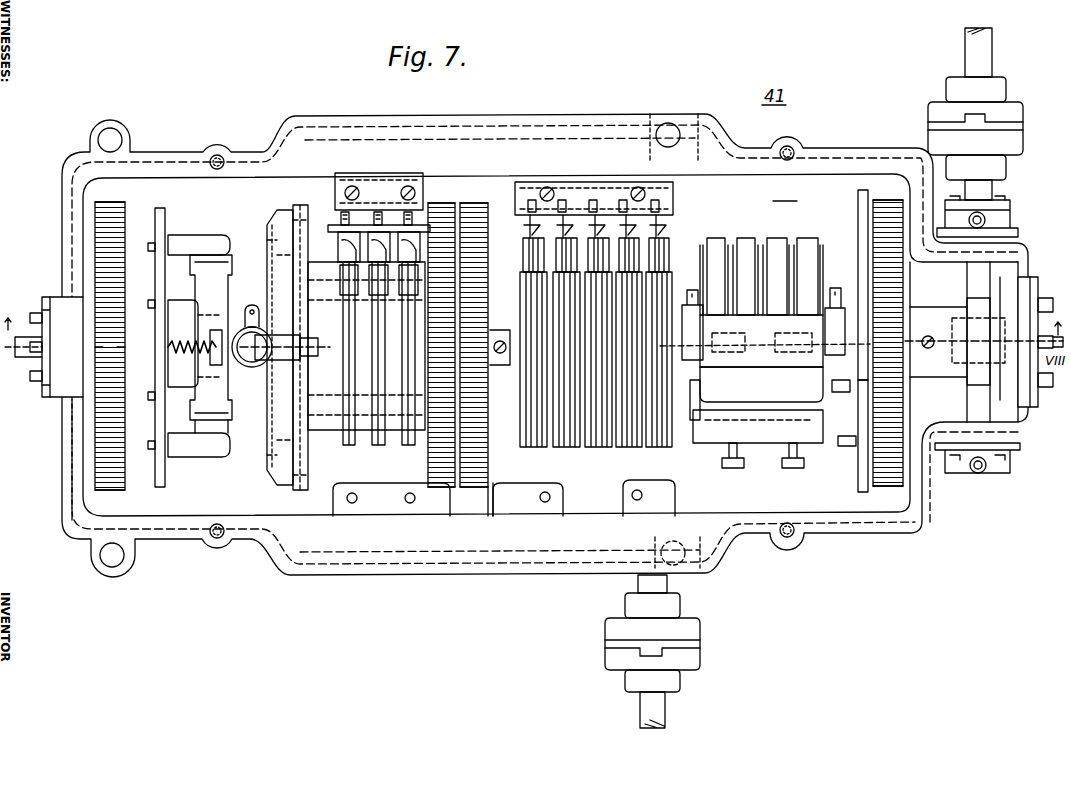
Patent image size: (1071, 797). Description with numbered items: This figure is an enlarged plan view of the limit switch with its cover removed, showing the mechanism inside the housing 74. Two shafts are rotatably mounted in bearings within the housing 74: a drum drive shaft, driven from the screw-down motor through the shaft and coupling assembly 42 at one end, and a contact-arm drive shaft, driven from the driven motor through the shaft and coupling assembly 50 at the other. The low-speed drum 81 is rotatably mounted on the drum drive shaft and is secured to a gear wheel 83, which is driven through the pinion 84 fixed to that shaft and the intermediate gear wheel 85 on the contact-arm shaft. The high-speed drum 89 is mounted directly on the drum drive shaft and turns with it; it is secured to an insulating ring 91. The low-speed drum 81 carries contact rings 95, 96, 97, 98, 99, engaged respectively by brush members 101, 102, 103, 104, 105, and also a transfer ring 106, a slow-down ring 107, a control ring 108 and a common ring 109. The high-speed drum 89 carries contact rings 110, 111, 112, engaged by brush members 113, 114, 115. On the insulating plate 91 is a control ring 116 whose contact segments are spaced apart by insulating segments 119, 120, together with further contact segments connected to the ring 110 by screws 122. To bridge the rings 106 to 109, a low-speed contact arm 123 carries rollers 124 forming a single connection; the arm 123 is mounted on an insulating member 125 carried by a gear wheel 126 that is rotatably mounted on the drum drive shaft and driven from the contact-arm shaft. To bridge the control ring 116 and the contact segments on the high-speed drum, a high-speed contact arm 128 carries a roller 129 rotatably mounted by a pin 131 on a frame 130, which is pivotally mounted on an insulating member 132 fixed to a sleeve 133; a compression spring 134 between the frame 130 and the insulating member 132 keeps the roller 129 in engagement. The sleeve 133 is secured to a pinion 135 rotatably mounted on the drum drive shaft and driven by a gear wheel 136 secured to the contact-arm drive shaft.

The shaft and coupling assembly 42 is at (1010, 100).
The shaft and coupling assembly 50 is at (668, 584).
The housing 74 is at (940, 518).
The low-speed drum 81 is at (769, 325).
The gear wheel 83 is at (470, 318).
The pinion 84 is at (478, 330).
The gear wheel 85 is at (436, 458).
The high-speed drum 89 is at (352, 450).
The insulating ring 91 is at (297, 212).
The contact ring 95 is at (530, 447).
The contact ring 96 is at (563, 447).
The contact ring 97 is at (596, 447).
The contact ring 98 is at (628, 447).
The contact ring 99 is at (658, 447).
The brush member 101 is at (530, 203).
The brush member 102 is at (562, 203).
The brush member 103 is at (594, 203).
The brush member 104 is at (623, 200).
The brush member 105 is at (660, 205).
The transfer ring 106 is at (714, 238).
The slow-down ring 107 is at (746, 238).
The control ring 108 is at (778, 238).
The common ring 109 is at (810, 238).
The contact ring 110 is at (355, 437).
The contact ring 111 is at (380, 445).
The contact ring 112 is at (412, 437).
The brush member 113 is at (343, 214).
The brush member 114 is at (378, 212).
The brush member 115 is at (410, 212).
The control ring 116 is at (296, 358).
The insulating segment 119 is at (270, 240).
The insulating segment 120 is at (270, 470).
The screw 122 is at (315, 338).
The low-speed contact arm 123 is at (842, 488).
The roller 124 is at (775, 315).
The insulating member 125 is at (860, 484).
The gear wheel 126 is at (895, 284).
The high-speed contact arm 128 is at (228, 473).
The roller 129 is at (260, 372).
The frame 130 is at (212, 362).
The pin 131 is at (246, 362).
The insulating member 132 is at (160, 278).
The sleeve 133 is at (138, 310).
The compression spring 134 is at (178, 341).
The pinion 135 is at (100, 346).
The gear wheel 136 is at (120, 488).